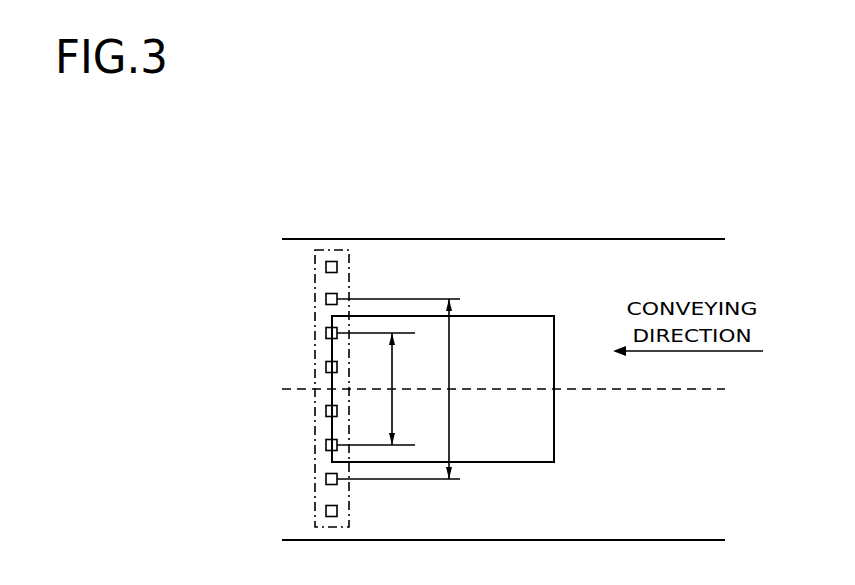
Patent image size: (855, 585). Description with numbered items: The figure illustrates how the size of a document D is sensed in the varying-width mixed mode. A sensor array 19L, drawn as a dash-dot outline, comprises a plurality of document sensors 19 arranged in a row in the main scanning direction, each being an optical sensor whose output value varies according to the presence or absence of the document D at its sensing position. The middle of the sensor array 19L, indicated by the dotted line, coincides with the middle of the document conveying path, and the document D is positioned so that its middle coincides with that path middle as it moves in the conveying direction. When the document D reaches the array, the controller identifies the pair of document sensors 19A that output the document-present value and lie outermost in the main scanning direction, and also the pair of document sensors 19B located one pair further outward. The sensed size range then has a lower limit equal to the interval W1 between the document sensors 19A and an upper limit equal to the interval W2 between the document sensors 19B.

The document sensor 19 is at (326, 267).
The outermost document sensors 19A is at (326, 333).
The further-outward document sensors 19B is at (326, 299).
The sensor array 19L is at (335, 249).
The document D is at (554, 442).
The interval between the pair of document sensors 19A W1 is at (388, 389).
The interval between the pair of document sensors 19B W2 is at (417, 389).